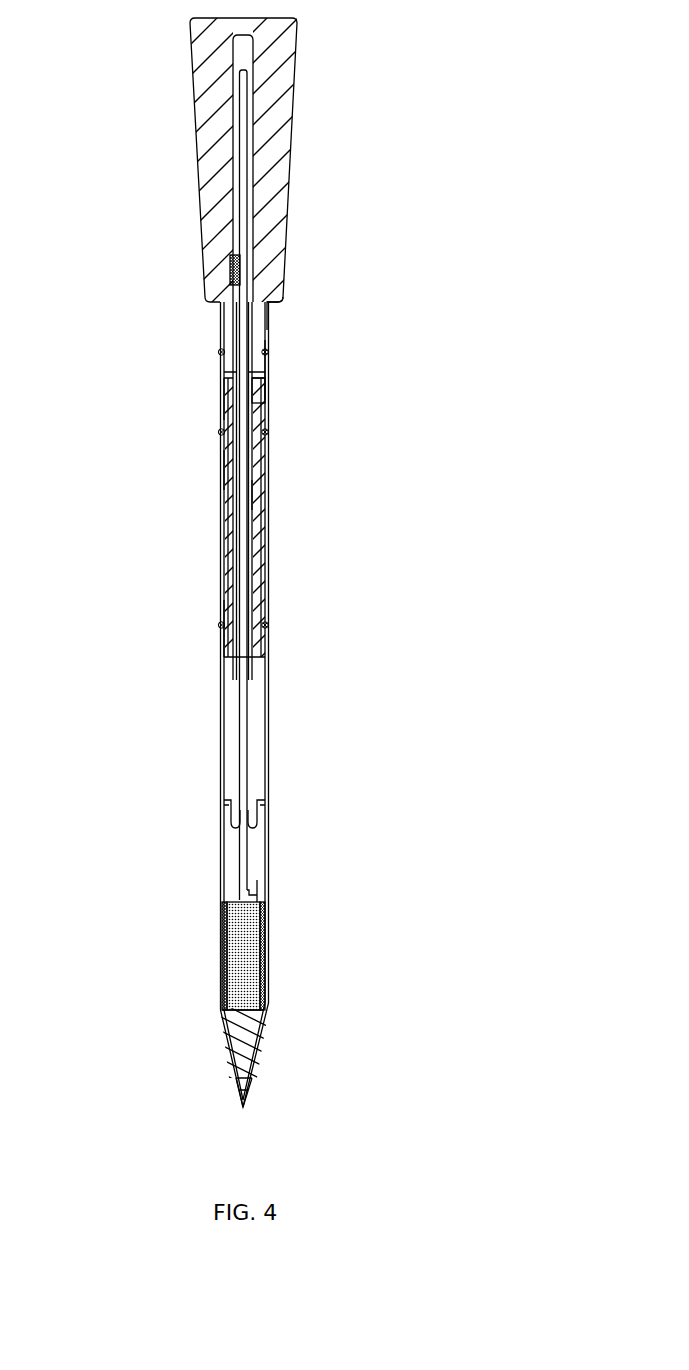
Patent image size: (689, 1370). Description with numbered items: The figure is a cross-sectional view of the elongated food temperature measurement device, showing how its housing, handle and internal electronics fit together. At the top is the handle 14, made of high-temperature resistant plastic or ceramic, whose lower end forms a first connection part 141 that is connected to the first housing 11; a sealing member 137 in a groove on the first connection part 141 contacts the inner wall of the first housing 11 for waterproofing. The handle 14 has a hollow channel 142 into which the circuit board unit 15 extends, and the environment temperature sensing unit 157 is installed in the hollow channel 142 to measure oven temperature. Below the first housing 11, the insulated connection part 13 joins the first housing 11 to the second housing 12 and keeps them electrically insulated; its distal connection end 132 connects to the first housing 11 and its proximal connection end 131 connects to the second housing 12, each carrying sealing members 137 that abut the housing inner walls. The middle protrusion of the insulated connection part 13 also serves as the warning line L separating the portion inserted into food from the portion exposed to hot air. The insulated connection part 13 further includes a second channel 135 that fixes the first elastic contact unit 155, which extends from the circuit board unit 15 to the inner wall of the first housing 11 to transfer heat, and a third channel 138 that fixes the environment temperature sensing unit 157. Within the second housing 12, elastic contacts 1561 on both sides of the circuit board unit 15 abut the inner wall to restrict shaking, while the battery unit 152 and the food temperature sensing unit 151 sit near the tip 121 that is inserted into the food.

The first housing 11 is at (267, 368).
The second housing 12 is at (268, 693).
The tip 121 is at (245, 1078).
The insulated connection part 13 is at (222, 530).
The proximal connection end 131 is at (222, 642).
The distal connection end 132 is at (222, 395).
The second channel 135 is at (252, 548).
The sealing members 137 is at (219, 352).
The third channel 138 is at (222, 470).
The handle 14 is at (287, 157).
The first connection part 141 is at (267, 323).
The hollow channel 142 is at (243, 54).
The circuit board unit 15 is at (240, 745).
The food temperature sensing unit 151 is at (265, 1025).
The battery unit 152 is at (222, 975).
The first elastic contact unit 155 is at (267, 403).
The environment temperature sensing unit 157 is at (230, 270).
The elastic contacts 1561 is at (222, 803).
The warning line L is at (255, 495).